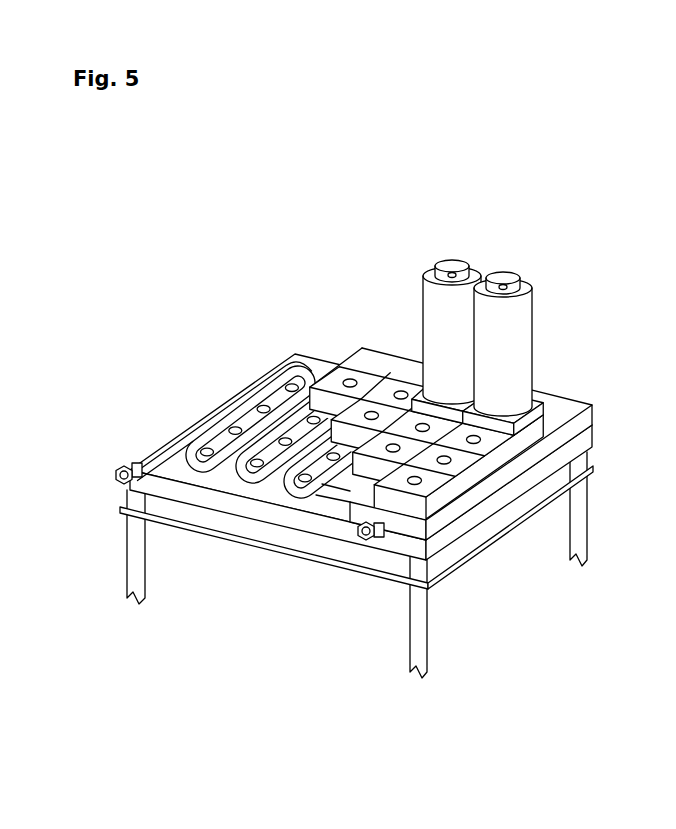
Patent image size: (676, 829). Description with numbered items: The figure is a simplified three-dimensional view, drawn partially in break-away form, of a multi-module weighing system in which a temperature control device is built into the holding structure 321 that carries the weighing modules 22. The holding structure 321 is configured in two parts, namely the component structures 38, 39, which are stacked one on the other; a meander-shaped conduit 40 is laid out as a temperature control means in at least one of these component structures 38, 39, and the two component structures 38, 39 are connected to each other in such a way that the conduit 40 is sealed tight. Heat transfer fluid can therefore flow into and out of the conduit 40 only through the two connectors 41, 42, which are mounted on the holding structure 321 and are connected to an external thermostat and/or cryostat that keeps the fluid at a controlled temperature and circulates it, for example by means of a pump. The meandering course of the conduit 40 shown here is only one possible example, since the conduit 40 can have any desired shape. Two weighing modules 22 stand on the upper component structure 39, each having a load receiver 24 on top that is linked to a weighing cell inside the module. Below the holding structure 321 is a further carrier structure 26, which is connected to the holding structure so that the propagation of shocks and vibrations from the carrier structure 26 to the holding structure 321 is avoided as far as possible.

The weighing module 22 is at (487, 315).
The load receiver 24 is at (502, 280).
The carrier structure 26 is at (505, 522).
The component structure 38 is at (568, 452).
The component structure 39 is at (568, 432).
The meander-shaped conduit 40 is at (228, 398).
The connector 41 is at (118, 478).
The connector 42 is at (360, 542).
The holding structure 321 is at (395, 387).